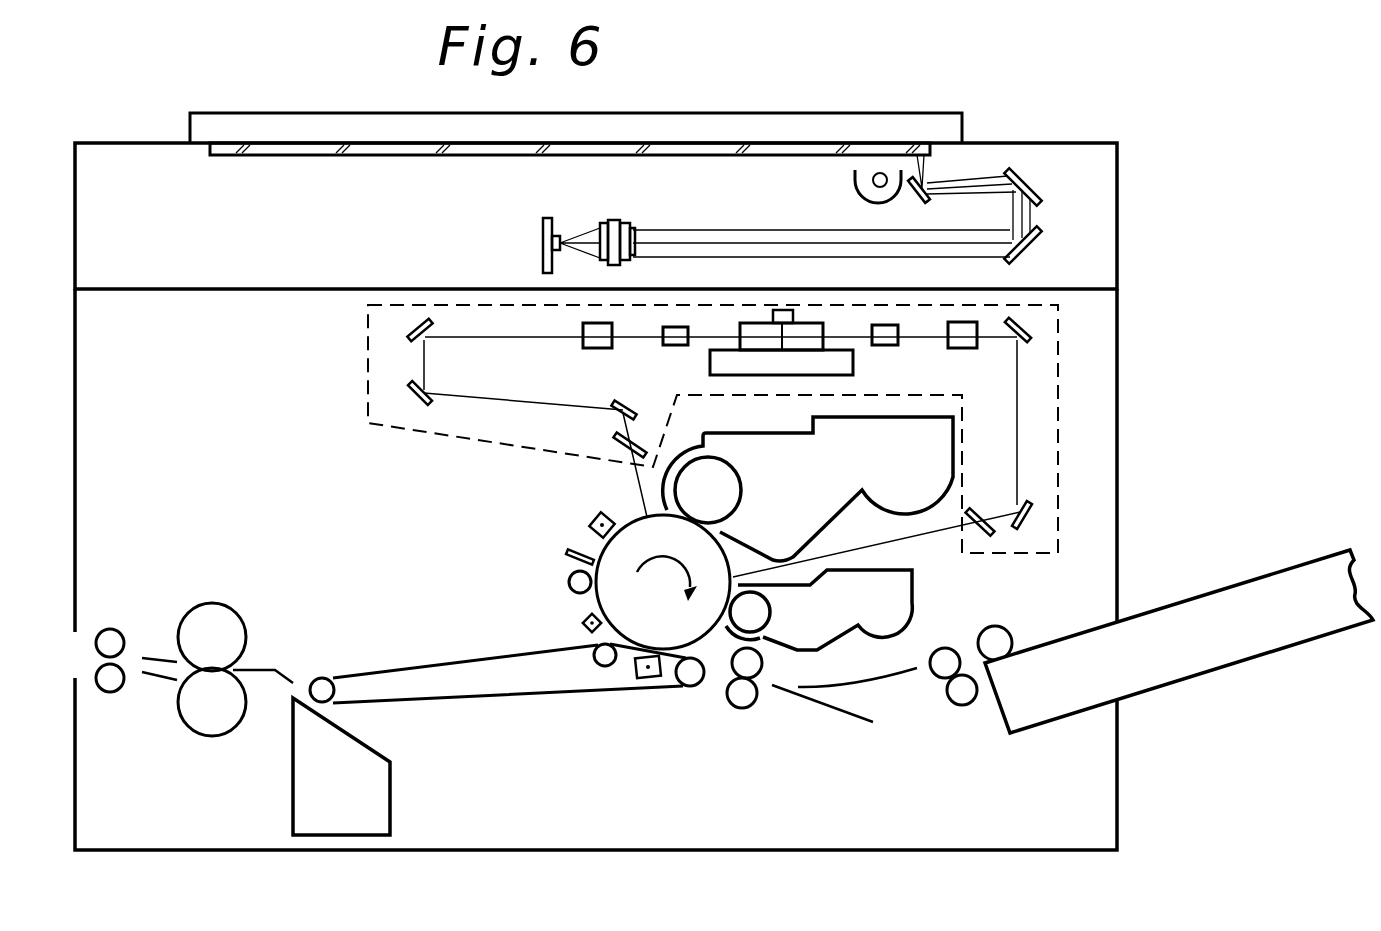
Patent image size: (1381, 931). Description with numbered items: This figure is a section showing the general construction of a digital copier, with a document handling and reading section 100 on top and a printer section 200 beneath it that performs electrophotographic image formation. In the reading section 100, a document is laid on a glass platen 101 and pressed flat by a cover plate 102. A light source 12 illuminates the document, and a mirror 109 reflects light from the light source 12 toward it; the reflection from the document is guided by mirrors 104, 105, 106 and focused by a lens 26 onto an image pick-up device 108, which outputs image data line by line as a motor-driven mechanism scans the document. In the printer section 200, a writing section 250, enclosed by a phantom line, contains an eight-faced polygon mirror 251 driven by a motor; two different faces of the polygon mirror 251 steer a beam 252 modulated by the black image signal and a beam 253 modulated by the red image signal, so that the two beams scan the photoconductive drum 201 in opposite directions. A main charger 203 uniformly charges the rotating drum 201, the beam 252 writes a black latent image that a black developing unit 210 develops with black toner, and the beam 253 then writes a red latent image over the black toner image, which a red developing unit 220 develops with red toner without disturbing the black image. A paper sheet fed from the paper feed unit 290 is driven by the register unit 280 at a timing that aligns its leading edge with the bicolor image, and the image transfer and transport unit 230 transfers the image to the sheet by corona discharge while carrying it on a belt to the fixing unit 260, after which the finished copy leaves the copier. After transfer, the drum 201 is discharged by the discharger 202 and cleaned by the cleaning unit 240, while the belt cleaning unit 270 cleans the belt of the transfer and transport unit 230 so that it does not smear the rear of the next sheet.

The light source 12 is at (880, 172).
The lens 26 is at (612, 222).
The document handling and reading section 100 is at (1117, 195).
The glass platen 101 is at (372, 157).
The cover plate 102 is at (962, 115).
The mirror 104 is at (912, 197).
The mirror 105 is at (1032, 178).
The mirror 106 is at (1036, 247).
The image pick-up device 108 is at (545, 225).
The mirror 109 is at (855, 180).
The printer section 200 is at (1118, 418).
The drum 201 is at (568, 588).
The discharger 202 is at (580, 626).
The main charger 203 is at (590, 515).
The black developing unit 210 is at (762, 434).
The red developing unit 220 is at (913, 588).
The image transfer and transport unit 230 is at (630, 697).
The cleaning unit 240 is at (568, 556).
The writing section 250 is at (1060, 380).
The polygon mirror 251 is at (710, 352).
The beam 252 is at (505, 400).
The beam 253 is at (1015, 405).
The fixing unit 260 is at (212, 737).
The belt cleaning unit 270 is at (390, 758).
The register unit 280 is at (746, 708).
The paper feed unit 290 is at (965, 704).